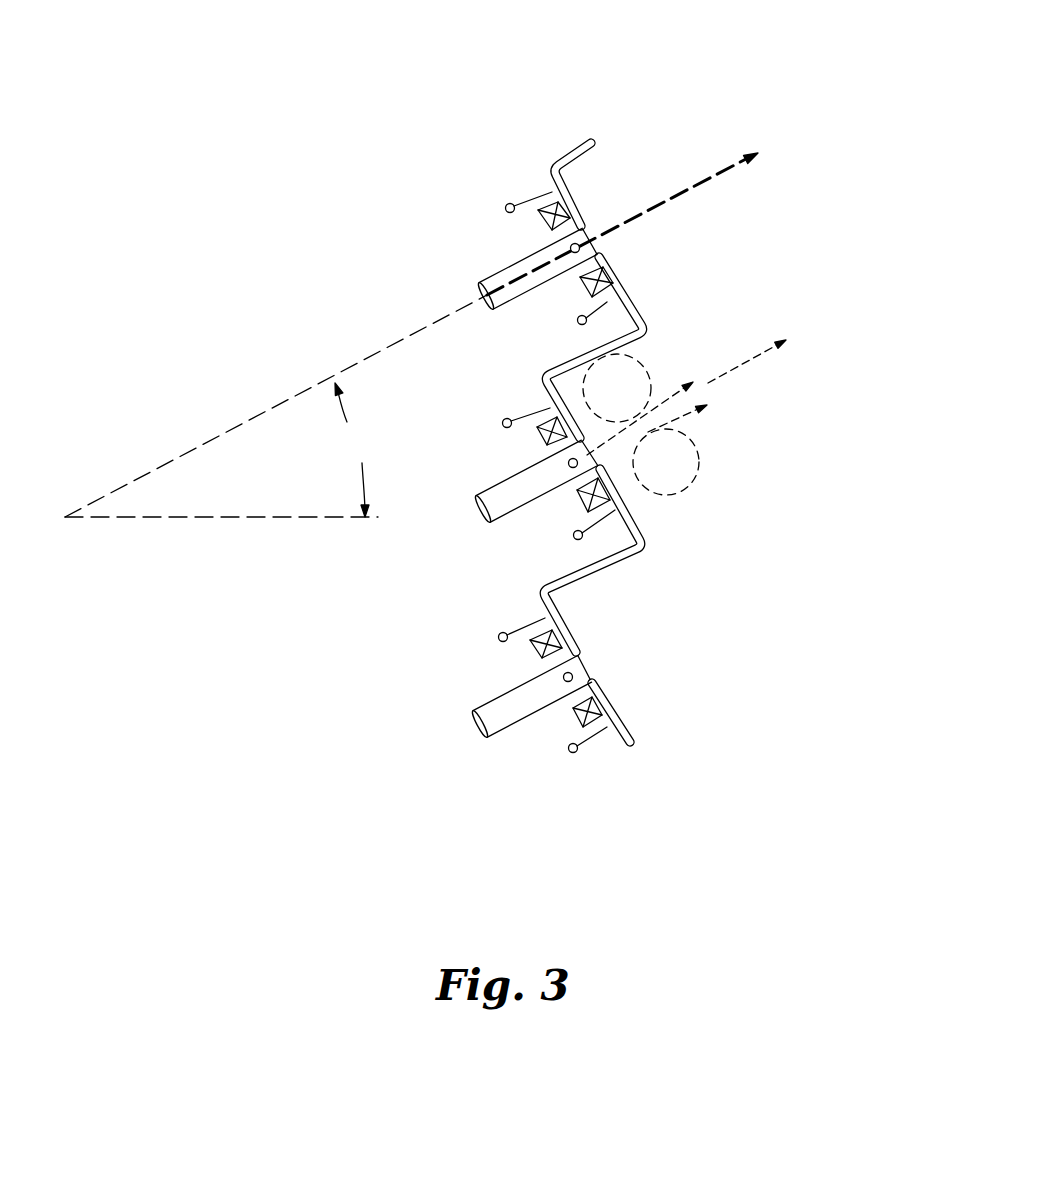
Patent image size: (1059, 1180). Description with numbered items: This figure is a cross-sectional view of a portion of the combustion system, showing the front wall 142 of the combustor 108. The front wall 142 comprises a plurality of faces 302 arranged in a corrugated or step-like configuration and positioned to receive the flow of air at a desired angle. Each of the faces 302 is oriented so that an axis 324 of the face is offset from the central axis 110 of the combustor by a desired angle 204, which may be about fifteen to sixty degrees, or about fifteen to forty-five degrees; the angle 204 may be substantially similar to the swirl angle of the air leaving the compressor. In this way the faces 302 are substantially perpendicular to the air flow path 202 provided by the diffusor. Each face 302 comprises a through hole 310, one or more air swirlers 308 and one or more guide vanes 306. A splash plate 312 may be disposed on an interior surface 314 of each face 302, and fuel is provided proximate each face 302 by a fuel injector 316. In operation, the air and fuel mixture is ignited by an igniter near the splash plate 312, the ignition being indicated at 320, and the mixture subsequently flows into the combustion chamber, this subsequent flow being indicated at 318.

The combustor 108 is at (692, 812).
The central axis 110 is at (337, 520).
The front wall 142 is at (661, 73).
The flow path 202 is at (727, 178).
The angle 204 is at (356, 450).
The faces 302 is at (412, 718).
The guide vane 306 is at (527, 628).
The air swirler 308 is at (531, 657).
The through hole 310 is at (603, 243).
The splash plate 312 is at (558, 170).
The interior surface 314 is at (544, 168).
The fuel injector 316 is at (510, 730).
The subsequent flow 318 is at (708, 383).
The ignition 320 is at (737, 441).
The axis 324 is at (695, 182).